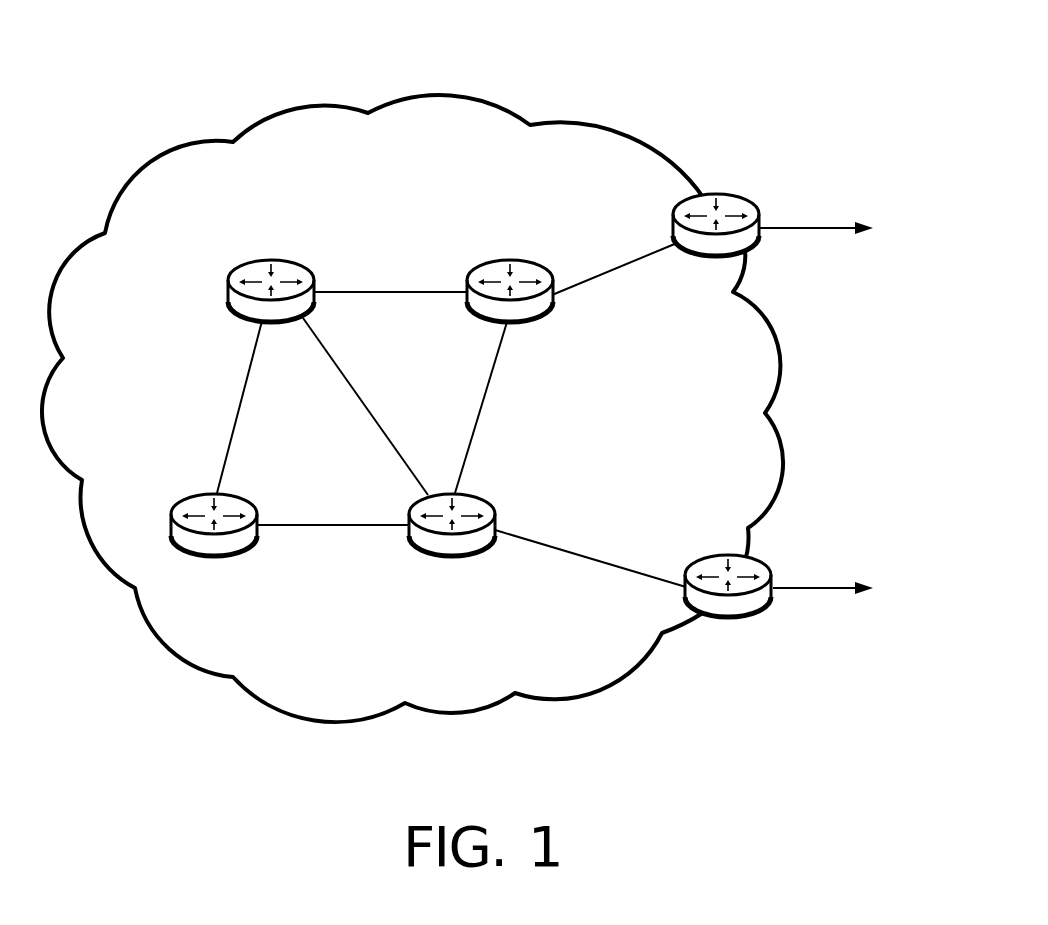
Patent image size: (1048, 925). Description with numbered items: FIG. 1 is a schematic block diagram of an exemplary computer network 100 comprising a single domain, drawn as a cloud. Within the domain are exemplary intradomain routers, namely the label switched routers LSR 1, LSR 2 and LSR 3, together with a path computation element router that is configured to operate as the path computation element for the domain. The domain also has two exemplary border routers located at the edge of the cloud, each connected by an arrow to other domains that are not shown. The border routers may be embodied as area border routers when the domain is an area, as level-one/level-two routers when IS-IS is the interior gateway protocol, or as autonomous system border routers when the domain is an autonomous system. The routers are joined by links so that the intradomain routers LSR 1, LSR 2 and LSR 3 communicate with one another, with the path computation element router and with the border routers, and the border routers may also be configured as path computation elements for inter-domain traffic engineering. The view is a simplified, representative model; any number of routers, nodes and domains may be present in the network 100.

The computer network 100 is at (772, 93).
The label switched router LSR 1 is at (214, 550).
The label switched router LSR 2 is at (510, 267).
The label switched router LSR 3 is at (451, 549).